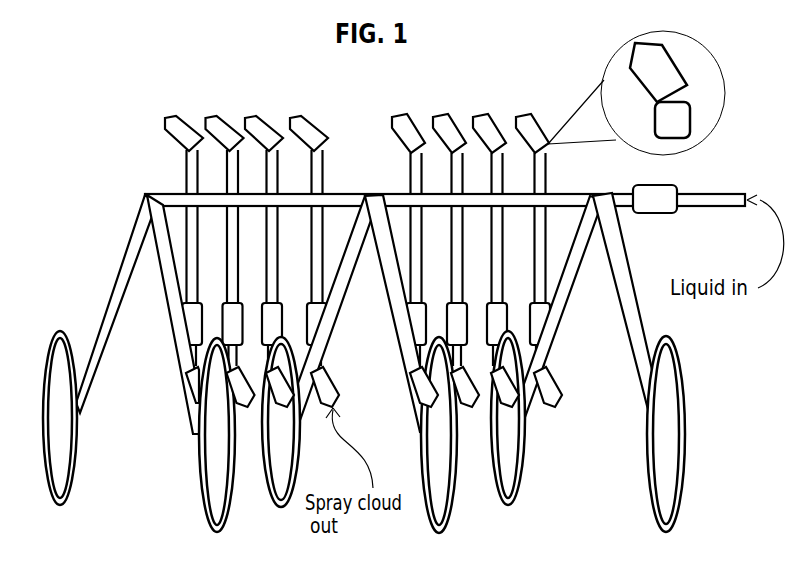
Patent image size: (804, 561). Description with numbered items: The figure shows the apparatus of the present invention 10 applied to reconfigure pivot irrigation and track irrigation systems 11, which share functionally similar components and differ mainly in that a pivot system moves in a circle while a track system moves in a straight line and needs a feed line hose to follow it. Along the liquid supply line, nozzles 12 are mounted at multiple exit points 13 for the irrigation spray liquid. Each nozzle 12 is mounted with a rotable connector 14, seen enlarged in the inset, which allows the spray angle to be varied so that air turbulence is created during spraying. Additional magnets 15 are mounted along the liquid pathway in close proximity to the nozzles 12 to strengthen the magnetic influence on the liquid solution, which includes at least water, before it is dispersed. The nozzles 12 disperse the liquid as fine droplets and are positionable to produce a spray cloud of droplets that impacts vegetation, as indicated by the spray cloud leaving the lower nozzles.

The present invention 10 is at (364, 292).
The pivot irrigation and track irrigation system 11 is at (145, 195).
The nozzle 12 is at (165, 124).
The exit point 13 is at (412, 165).
The rotable connector 14 is at (683, 98).
The additional magnet 15 is at (327, 332).